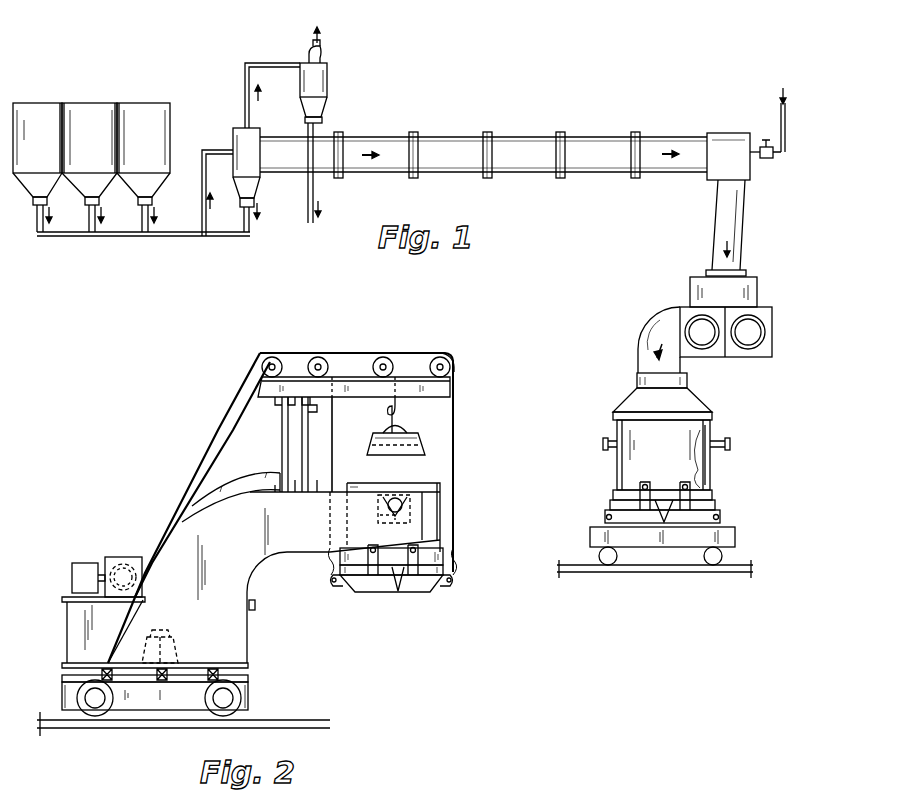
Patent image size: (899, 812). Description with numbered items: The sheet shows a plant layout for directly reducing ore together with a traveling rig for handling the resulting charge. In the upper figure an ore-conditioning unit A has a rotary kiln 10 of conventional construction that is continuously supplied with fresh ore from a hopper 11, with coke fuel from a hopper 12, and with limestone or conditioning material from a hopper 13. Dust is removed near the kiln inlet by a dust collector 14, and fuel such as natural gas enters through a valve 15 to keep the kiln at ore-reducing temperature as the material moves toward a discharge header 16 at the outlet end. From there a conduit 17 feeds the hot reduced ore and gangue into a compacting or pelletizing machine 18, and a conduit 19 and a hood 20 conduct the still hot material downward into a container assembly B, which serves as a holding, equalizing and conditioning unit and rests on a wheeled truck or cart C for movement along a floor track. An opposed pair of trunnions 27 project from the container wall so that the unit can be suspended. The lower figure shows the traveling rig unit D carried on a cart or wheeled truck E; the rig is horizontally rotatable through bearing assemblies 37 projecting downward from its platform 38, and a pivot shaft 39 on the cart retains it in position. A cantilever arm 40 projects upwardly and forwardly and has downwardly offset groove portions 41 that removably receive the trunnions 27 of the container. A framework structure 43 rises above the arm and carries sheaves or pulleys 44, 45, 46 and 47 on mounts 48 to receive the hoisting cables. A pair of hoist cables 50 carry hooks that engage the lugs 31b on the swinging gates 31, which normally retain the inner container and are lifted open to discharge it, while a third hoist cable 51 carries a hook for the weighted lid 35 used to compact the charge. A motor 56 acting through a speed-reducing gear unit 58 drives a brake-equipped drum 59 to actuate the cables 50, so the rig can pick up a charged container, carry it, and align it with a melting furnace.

In FIG. 1, the rotary kiln 10 is at (460, 137).
In FIG. 1, the hopper 11 is at (97, 103).
In FIG. 1, the hopper 12 is at (48, 103).
In FIG. 1, the hopper 13 is at (152, 103).
In FIG. 1, the dust collector 14 is at (327, 78).
In FIG. 1, the valve 15 is at (768, 158).
In FIG. 1, the discharge header 16 is at (707, 180).
In FIG. 1, the conduit 17 is at (741, 240).
In FIG. 1, the compacting or pelletizing machine 18 is at (686, 305).
In FIG. 1, the conduit 19 is at (648, 337).
In FIG. 1, the hood 20 is at (622, 405).
In FIG. 1, the trunnions 27 is at (603, 444).
In FIG. 2, the trunnions 27 is at (392, 520).
In FIG. 2, the swinging gates or leaves 31 is at (368, 585).
In FIG. 2, the hoist hook-receiving lug 31b is at (337, 588).
In FIG. 2, the weighted lid 35 is at (427, 448).
In FIG. 2, the bearing assemblies 37 is at (248, 674).
In FIG. 2, the platform 38 is at (62, 664).
In FIG. 2, the pivot shaft 39 is at (168, 676).
In FIG. 2, the cantilever arm 40 is at (266, 574).
In FIG. 2, the downwardly offset groove portions 41 is at (392, 497).
In FIG. 2, the framework structure 43 is at (282, 425).
In FIG. 2, the sheave or pulley 44 is at (273, 357).
In FIG. 2, the sheave or pulley 45 is at (319, 357).
In FIG. 2, the sheave or pulley 46 is at (385, 357).
In FIG. 2, the sheave or pulley 47 is at (447, 357).
In FIG. 2, the mounts 48 is at (455, 368).
In FIG. 2, the hoist chains or cables 50 is at (455, 407).
In FIG. 2, the hoist chain or cable 51 is at (399, 408).
In FIG. 2, the motor 56 is at (78, 563).
In FIG. 2, the speed-reducing gear unit 58 is at (114, 557).
In FIG. 2, the drum 59 is at (130, 563).
In FIG. 1, the ore-conditioning unit A is at (603, 128).
In FIG. 1, the container assembly B is at (612, 472).
In FIG. 2, the container assembly B is at (453, 500).
In FIG. 1, the wheeled truck or cart C is at (745, 538).
In FIG. 2, the traveling rig unit D is at (250, 626).
In FIG. 2, the cart or wheeled truck E is at (262, 693).